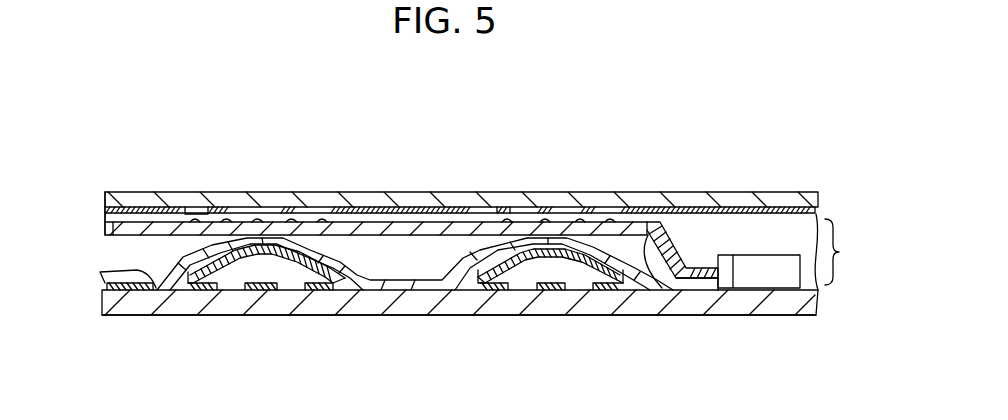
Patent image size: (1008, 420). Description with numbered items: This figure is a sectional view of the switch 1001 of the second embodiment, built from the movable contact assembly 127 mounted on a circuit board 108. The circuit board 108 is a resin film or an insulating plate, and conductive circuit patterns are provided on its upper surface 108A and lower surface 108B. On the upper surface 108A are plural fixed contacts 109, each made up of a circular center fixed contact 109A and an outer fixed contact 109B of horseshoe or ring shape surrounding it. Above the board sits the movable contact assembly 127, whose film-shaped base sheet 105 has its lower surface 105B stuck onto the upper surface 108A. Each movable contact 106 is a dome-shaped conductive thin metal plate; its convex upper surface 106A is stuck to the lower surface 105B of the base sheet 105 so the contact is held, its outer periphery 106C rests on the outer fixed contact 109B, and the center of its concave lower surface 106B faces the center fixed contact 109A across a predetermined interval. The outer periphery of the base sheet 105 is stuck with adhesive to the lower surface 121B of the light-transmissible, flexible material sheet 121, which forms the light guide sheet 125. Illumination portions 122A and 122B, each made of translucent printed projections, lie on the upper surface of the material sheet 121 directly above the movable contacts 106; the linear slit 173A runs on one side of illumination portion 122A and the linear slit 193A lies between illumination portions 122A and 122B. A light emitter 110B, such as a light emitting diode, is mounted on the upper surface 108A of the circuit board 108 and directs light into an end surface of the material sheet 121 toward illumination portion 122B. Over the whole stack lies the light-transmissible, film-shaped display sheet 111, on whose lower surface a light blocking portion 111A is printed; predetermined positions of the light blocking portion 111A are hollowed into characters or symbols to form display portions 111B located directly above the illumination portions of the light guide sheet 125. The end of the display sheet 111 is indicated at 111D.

The switch 1001 is at (806, 164).
The display sheet 111 is at (393, 205).
The light blocking portion 111A is at (150, 235).
The display portions 111B is at (250, 214).
The counter substrate end portion 111D is at (130, 236).
The illumination portion 122A is at (293, 210).
The illumination portion 122B is at (515, 207).
The slit 173A is at (165, 210).
The slit 193A is at (355, 235).
The movable contact assembly 127 is at (843, 252).
The base sheet 105 is at (387, 290).
The lower surface of base sheet 105B is at (323, 315).
The circuit board 108 is at (749, 313).
The upper surface of circuit board 108A is at (100, 272).
The lower surface of circuit board 108B is at (226, 312).
The upper surface of movable contact 106A is at (495, 248).
The movable contact 106 is at (548, 248).
The lower surface of movable contact 106B is at (522, 268).
The outer periphery of movable contact 106C is at (481, 284).
The fixed contacts 109 is at (643, 365).
The center fixed contact 109A is at (552, 290).
The outer fixed contact 109B is at (607, 290).
The material sheet 121 is at (668, 247).
The lower surface of material sheet 121B is at (678, 290).
The light guide sheet 125 is at (652, 222).
The light emitter 110B is at (780, 275).